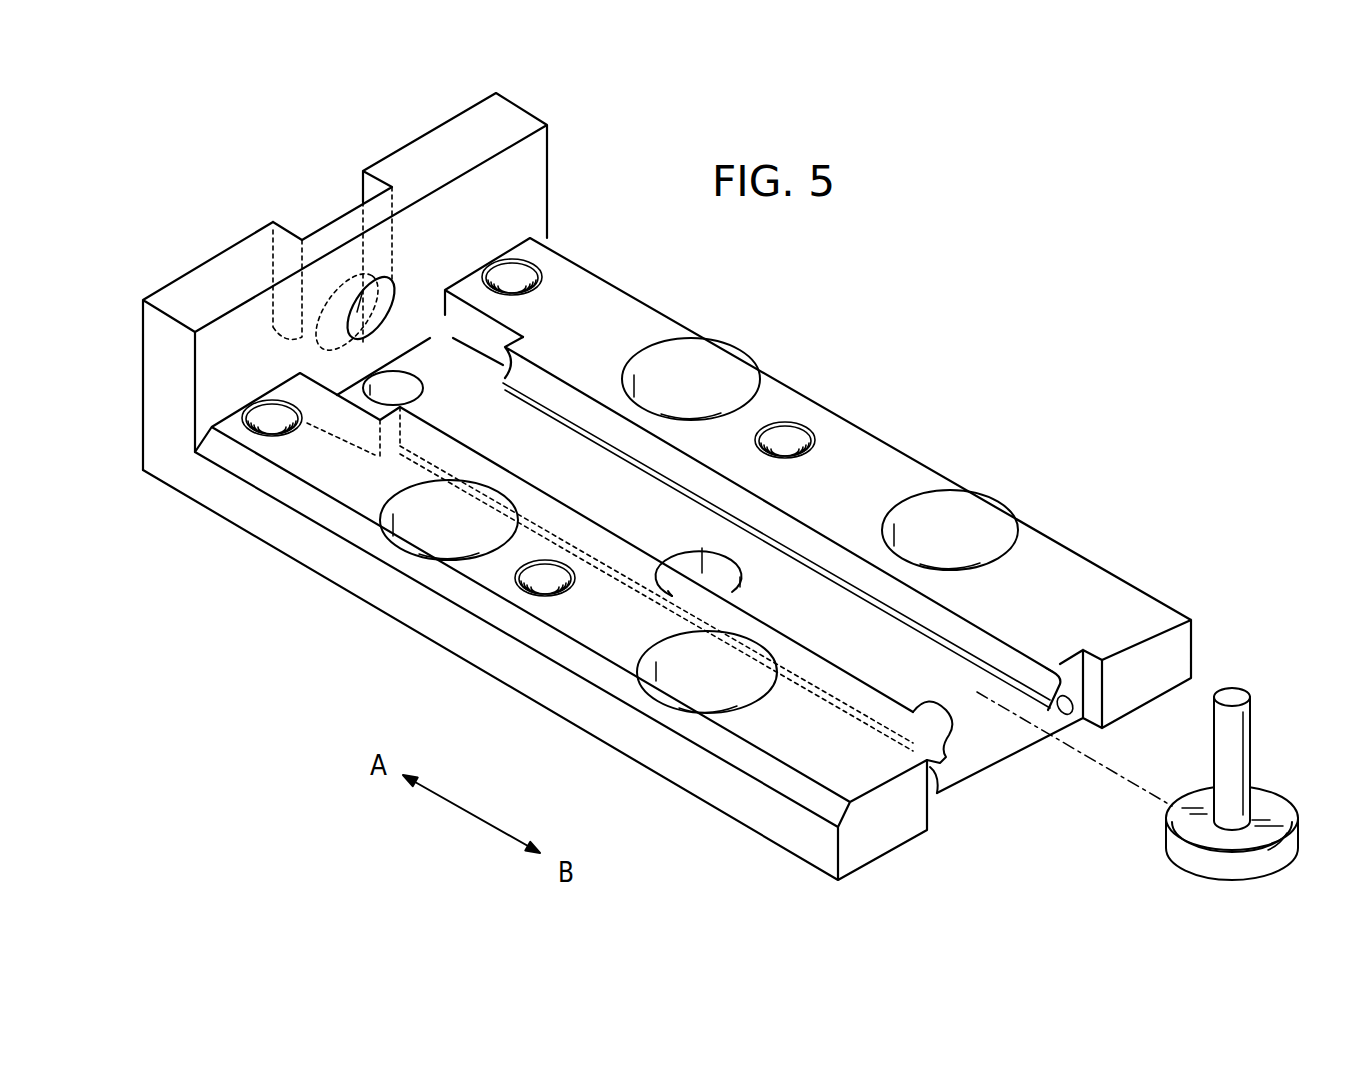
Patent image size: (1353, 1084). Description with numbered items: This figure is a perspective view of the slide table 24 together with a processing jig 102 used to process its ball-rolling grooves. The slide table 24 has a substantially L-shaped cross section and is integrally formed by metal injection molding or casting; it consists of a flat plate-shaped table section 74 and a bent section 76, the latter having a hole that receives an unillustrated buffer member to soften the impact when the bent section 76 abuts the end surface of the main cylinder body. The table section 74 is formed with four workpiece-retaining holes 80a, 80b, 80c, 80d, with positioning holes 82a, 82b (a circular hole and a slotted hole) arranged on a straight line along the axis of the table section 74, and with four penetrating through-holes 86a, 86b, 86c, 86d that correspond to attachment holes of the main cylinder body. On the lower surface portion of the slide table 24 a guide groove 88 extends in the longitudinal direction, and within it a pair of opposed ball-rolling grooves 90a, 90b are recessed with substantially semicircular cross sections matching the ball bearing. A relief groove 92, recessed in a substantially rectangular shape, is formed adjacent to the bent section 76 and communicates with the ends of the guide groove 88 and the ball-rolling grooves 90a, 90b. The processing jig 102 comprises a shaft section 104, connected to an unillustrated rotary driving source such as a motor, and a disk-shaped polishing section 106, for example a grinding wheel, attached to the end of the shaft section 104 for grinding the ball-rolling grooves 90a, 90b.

The slide table 24 is at (338, 597).
The table section 74 is at (1095, 610).
The bent section 76 is at (444, 144).
The workpiece-retaining hole 80a is at (803, 428).
The workpiece-retaining hole 80b is at (543, 588).
The workpiece-retaining hole 80c is at (518, 270).
The workpiece-retaining hole 80d is at (273, 425).
The positioning hole 82a is at (408, 390).
The positioning hole 82b is at (695, 557).
The penetrating through-hole 86a is at (947, 515).
The penetrating through-hole 86b is at (714, 682).
The penetrating through-hole 86c is at (690, 368).
The penetrating through-hole 86d is at (443, 537).
The guide groove 88 is at (987, 730).
The ball-rolling groove 90a is at (1010, 664).
The ball-rolling groove 90b is at (915, 714).
The relief groove 92 is at (501, 336).
The processing jig 102 is at (1196, 818).
The shaft section 104 is at (1220, 737).
The polishing section 106 is at (1182, 855).